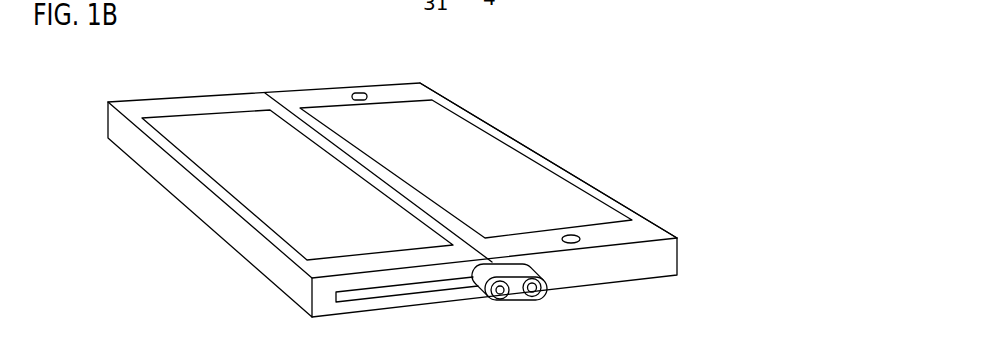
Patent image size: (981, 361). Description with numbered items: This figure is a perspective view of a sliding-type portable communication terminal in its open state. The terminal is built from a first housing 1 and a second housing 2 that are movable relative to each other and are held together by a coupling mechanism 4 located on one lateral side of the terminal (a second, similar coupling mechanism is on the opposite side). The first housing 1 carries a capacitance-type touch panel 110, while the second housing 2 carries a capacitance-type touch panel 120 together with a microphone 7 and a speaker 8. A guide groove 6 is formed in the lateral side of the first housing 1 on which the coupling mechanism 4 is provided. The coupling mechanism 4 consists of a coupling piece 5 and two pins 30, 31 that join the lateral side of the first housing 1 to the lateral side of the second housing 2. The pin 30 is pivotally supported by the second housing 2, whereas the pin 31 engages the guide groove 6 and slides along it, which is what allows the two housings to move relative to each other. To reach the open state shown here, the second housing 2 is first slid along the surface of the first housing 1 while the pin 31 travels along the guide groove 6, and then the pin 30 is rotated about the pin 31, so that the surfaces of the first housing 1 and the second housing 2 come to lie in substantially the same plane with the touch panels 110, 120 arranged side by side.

The first housing 1 is at (217, 218).
The second housing 2 is at (562, 167).
The touch panel 110 is at (223, 140).
The touch panel 120 is at (420, 123).
The speaker 8 is at (358, 92).
The microphone 7 is at (574, 233).
The guide groove 6 is at (360, 297).
The coupling mechanism 4 is at (541, 309).
The coupling piece 5 is at (517, 299).
The pin 30 is at (548, 291).
The pin 31 is at (498, 301).